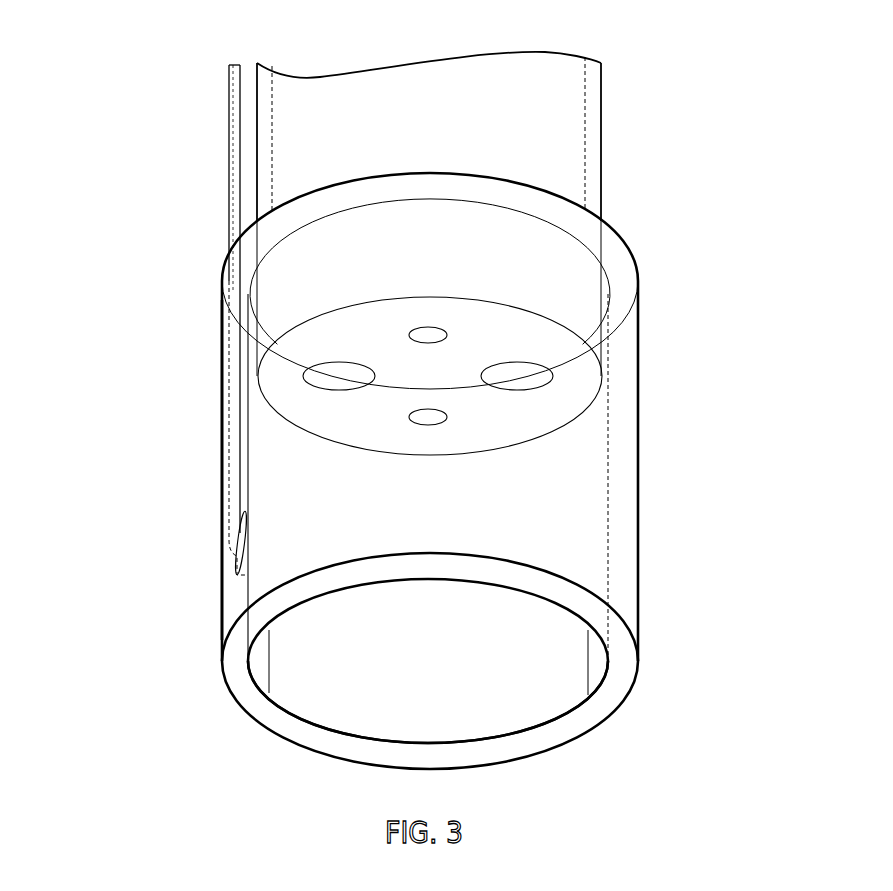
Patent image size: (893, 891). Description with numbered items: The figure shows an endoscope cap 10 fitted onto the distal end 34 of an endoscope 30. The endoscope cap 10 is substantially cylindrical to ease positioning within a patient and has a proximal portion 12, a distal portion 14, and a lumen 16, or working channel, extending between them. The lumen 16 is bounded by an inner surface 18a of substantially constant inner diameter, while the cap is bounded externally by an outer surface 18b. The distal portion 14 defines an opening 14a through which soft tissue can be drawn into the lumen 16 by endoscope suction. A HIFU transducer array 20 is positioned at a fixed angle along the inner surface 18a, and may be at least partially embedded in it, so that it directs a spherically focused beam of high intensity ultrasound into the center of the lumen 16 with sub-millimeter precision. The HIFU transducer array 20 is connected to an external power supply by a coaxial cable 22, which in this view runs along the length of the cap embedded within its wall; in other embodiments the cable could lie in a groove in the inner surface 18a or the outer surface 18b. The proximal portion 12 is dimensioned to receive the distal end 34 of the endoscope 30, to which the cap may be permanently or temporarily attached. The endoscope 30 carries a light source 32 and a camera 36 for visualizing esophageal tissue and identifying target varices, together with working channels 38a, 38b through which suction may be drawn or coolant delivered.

The endoscope cap 10 is at (115, 303).
The proximal portion 12 is at (643, 328).
The distal portion 14 is at (645, 622).
The opening 14a is at (377, 698).
The lumen 16 is at (513, 517).
The inner surface 18a is at (248, 485).
The outer surface 18b is at (222, 460).
The HIFU transducer array 20 is at (245, 550).
The coaxial cable 22 is at (230, 181).
The endoscope 30 is at (632, 92).
The light source 32 is at (433, 333).
The distal end 34 is at (580, 273).
The camera 36 is at (433, 415).
The working channel 38a is at (344, 373).
The working channel 38b is at (516, 373).